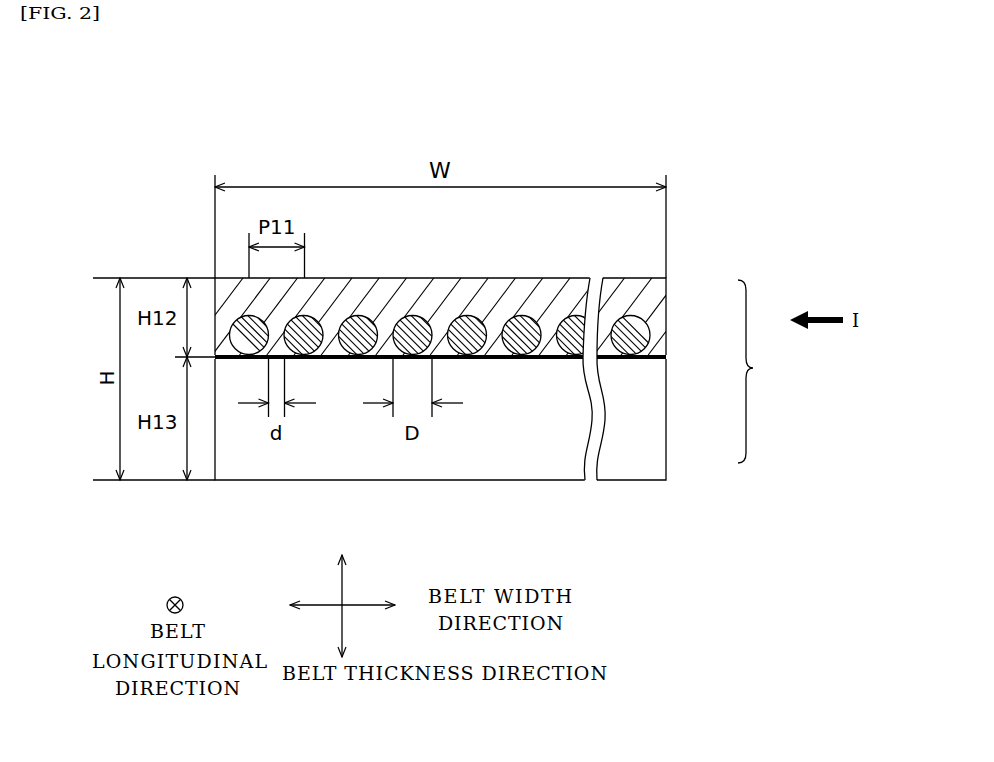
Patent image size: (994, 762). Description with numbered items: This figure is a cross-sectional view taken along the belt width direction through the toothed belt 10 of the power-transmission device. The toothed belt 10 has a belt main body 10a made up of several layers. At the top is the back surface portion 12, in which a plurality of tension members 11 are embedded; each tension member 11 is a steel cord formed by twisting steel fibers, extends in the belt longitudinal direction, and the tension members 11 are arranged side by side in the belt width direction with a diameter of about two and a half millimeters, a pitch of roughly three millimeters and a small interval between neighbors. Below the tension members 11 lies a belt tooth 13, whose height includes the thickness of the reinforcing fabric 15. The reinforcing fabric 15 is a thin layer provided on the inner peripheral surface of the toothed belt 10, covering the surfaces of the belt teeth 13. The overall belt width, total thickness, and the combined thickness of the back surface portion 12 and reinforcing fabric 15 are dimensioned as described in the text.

The toothed belt 10 is at (550, 120).
The belt main body 10a is at (767, 371).
The tension member 11 is at (652, 342).
The back surface portion 12 is at (650, 292).
The belt tooth 13 is at (640, 447).
The reinforcing fabric 15 is at (647, 359).